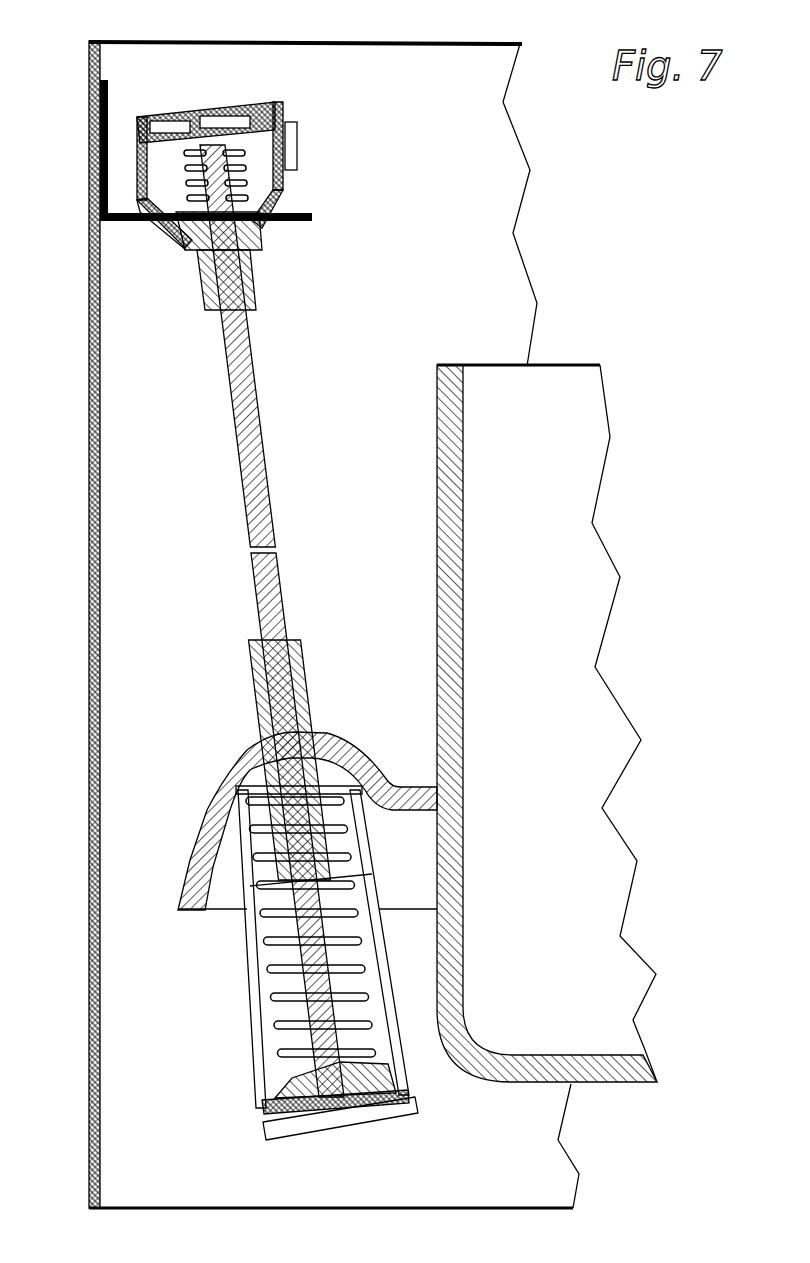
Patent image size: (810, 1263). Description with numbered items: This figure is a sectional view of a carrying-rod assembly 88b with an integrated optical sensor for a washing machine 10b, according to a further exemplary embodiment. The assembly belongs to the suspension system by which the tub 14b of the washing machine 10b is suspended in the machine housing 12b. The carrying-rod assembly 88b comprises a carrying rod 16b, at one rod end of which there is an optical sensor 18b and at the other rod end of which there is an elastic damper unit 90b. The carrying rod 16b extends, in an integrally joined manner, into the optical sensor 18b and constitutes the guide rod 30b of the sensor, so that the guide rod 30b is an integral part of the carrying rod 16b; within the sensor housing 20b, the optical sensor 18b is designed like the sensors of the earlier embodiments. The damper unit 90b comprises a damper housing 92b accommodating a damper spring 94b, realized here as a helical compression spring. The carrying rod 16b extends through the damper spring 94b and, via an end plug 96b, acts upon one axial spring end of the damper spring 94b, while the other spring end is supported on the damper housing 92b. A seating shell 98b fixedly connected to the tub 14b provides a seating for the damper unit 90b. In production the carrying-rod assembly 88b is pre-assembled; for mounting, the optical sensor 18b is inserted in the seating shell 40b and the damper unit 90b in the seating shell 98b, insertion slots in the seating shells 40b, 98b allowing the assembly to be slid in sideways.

The washing machine 10b is at (565, 190).
The machine housing 12b is at (89, 608).
The tub 14b is at (437, 470).
The carrying rod 16b is at (257, 578).
The optical sensor 18b is at (278, 108).
The sensor housing 20b is at (288, 210).
The guide rod 30b is at (251, 340).
The seating shell 40b is at (163, 242).
The carrying-rod assembly 88b is at (240, 692).
The damper unit 90b is at (253, 1007).
The damper housing 92b is at (410, 1062).
The damper spring 94b is at (277, 930).
The end plug 96b is at (382, 1118).
The seating shell 98b is at (350, 733).